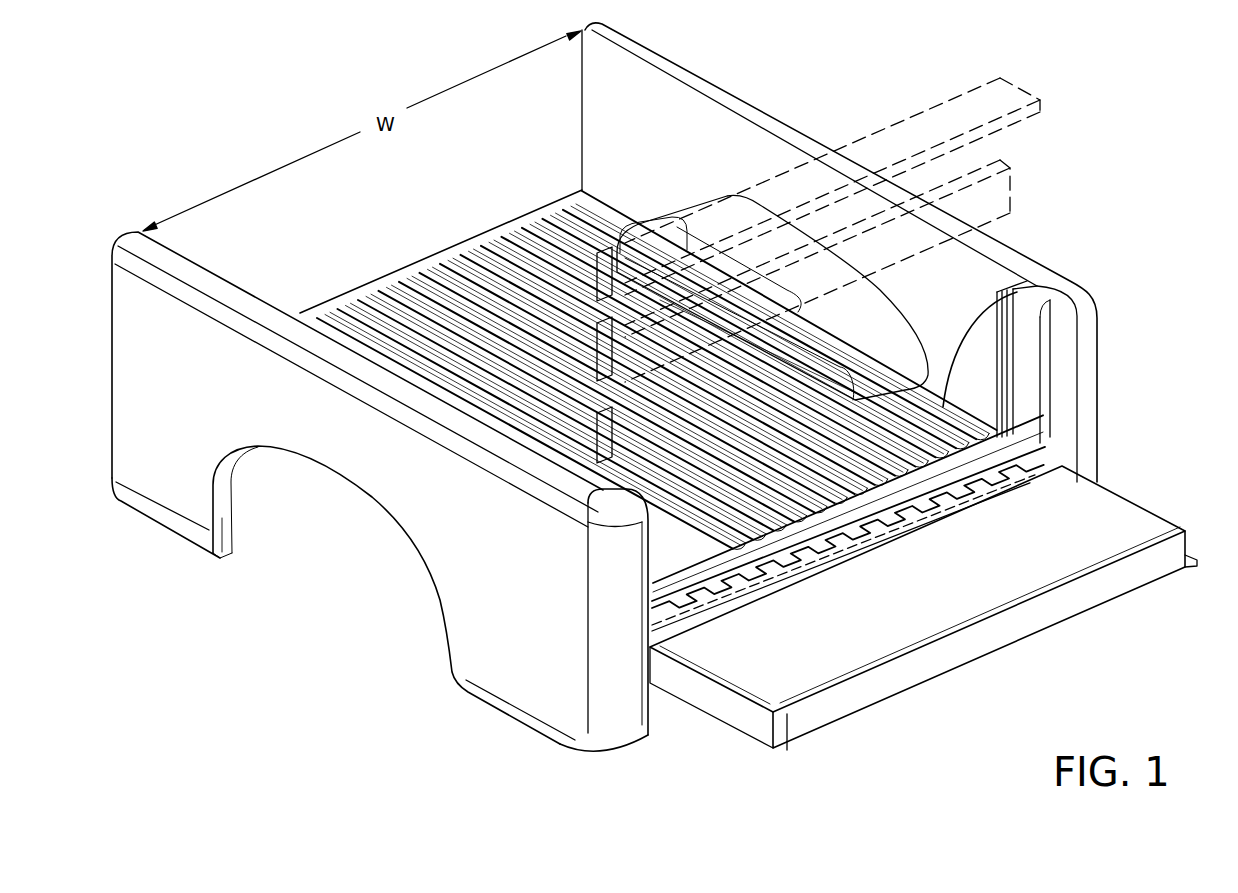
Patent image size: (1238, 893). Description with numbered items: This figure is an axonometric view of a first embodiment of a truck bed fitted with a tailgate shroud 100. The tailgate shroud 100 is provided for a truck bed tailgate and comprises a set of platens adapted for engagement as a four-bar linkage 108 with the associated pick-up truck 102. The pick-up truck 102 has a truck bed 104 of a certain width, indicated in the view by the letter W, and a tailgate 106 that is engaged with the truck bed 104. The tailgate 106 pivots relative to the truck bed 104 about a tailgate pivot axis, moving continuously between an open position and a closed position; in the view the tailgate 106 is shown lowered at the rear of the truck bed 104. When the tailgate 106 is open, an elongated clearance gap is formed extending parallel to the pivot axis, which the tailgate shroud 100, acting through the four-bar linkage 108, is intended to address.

The tailgate shroud 100 is at (1045, 458).
The pick-up truck 102 is at (467, 570).
The truck bed 104 is at (1067, 275).
The tailgate 106 is at (860, 698).
The four-bar linkage 108 is at (1050, 447).